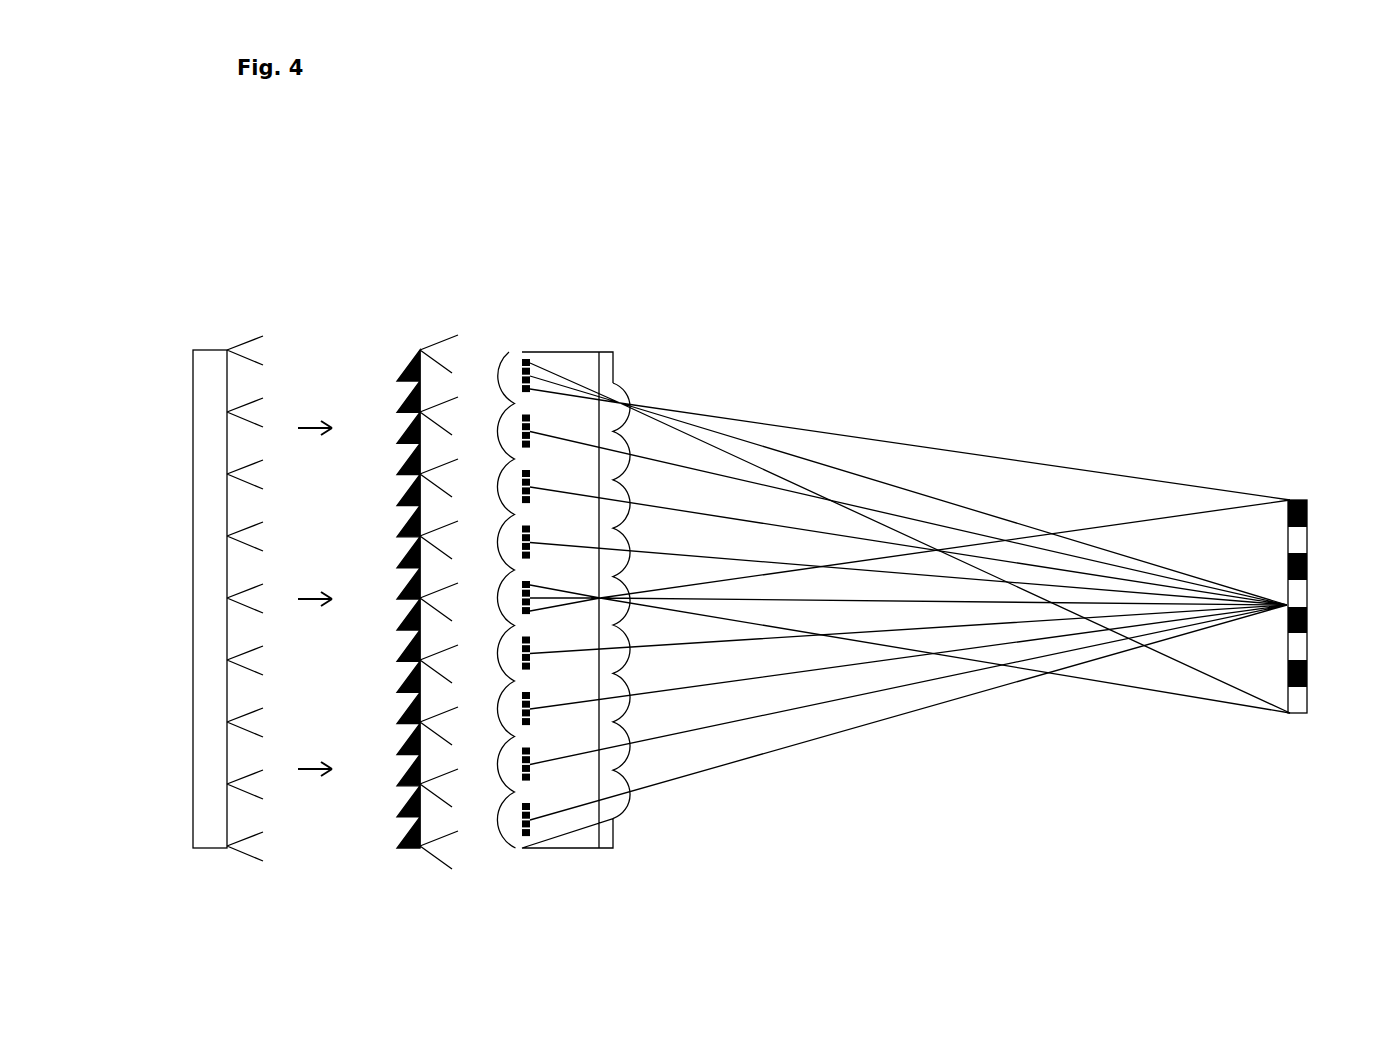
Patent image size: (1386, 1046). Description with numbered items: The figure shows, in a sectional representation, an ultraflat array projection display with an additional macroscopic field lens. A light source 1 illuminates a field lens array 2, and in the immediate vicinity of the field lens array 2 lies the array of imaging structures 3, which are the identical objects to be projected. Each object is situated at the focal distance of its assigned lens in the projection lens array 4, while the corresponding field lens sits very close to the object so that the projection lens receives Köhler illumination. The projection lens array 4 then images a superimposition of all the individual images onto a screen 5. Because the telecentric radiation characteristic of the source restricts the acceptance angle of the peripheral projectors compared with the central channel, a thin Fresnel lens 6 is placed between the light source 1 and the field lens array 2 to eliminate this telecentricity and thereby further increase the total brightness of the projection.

The light source 1 is at (195, 350).
The field lens array 2 is at (500, 360).
The array of imaging structures 3 is at (527, 376).
The projection lens array 4 is at (627, 388).
The screen 5 is at (1300, 501).
The Fresnel lens 6 is at (420, 352).